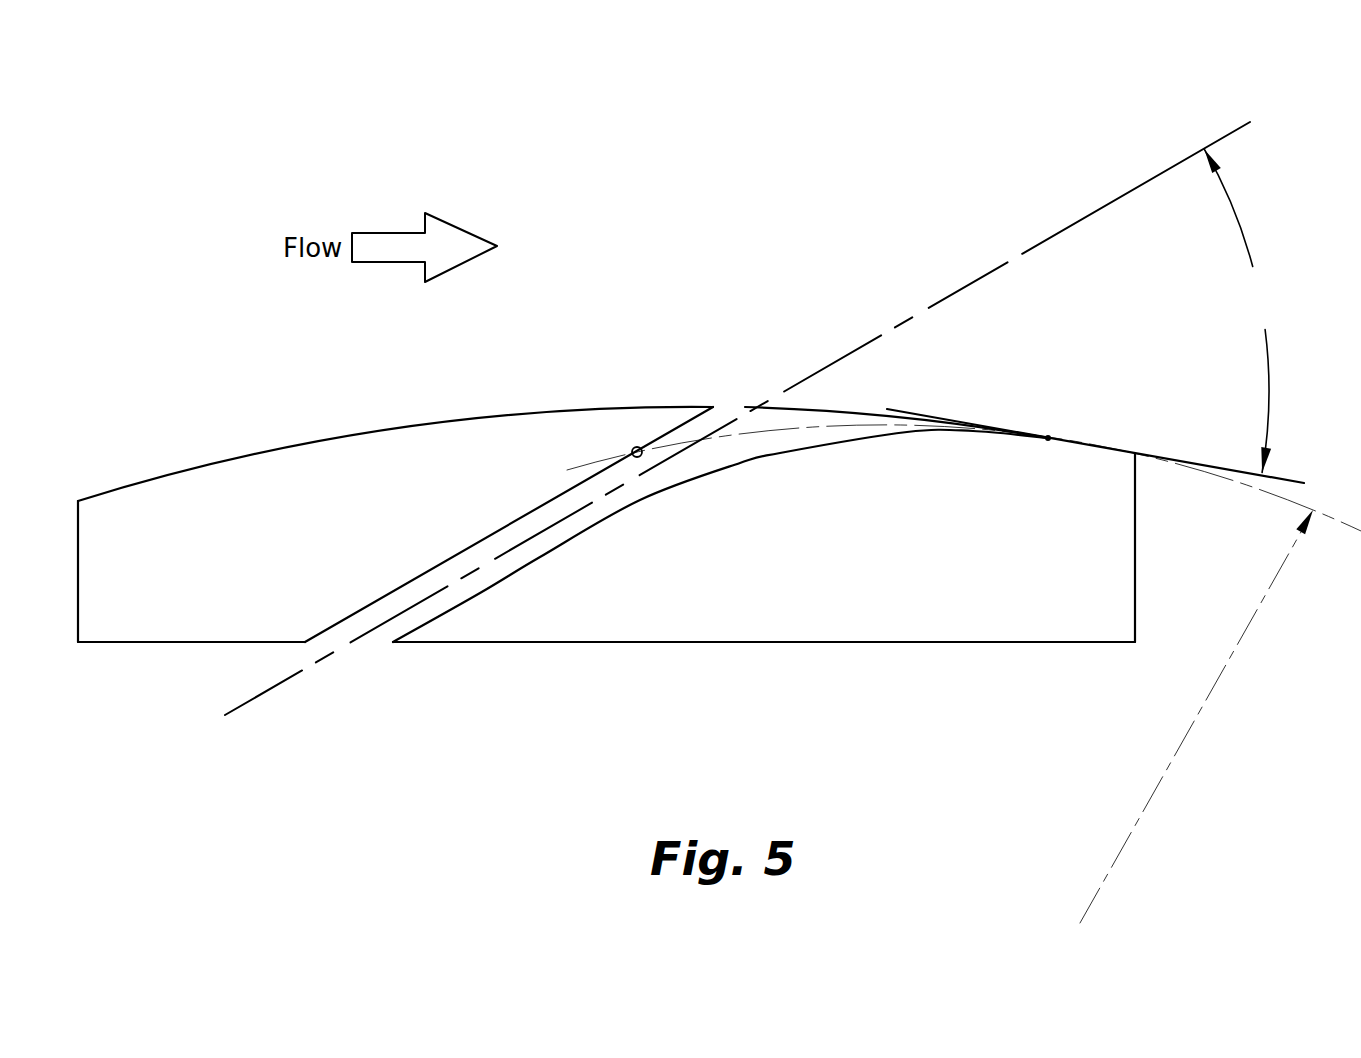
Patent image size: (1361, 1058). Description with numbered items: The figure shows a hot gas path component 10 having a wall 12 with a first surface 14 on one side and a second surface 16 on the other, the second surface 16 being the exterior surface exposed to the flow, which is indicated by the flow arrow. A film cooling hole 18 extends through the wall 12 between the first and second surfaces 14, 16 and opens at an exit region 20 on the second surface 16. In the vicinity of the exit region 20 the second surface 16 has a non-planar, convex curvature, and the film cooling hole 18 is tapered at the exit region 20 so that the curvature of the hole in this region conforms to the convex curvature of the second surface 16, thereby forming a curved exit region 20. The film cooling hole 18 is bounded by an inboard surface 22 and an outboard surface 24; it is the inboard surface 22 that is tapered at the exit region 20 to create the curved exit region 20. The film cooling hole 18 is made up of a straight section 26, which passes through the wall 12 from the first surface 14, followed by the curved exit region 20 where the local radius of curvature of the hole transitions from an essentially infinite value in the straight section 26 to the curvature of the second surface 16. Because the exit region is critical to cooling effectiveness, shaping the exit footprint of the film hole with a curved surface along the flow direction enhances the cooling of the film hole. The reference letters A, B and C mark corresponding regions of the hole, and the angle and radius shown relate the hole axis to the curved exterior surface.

The component 10 is at (600, 203).
The wall 12 is at (143, 622).
The first surface 14 is at (637, 643).
The second surface 16 is at (262, 451).
The film cooling hole 18 is at (392, 632).
The exit region 20 is at (734, 396).
The inboard surface 22 is at (740, 456).
The outboard surface 24 is at (640, 447).
The straight section 26 is at (433, 608).